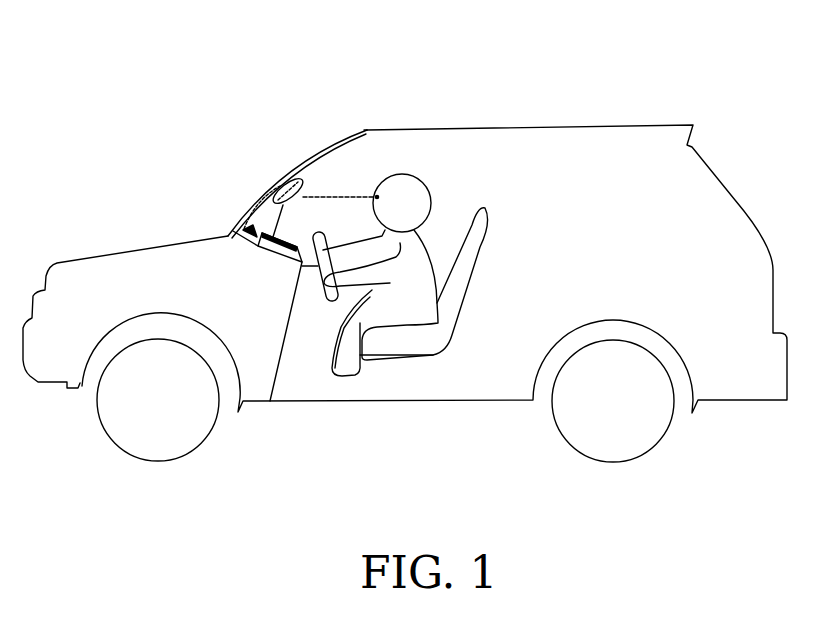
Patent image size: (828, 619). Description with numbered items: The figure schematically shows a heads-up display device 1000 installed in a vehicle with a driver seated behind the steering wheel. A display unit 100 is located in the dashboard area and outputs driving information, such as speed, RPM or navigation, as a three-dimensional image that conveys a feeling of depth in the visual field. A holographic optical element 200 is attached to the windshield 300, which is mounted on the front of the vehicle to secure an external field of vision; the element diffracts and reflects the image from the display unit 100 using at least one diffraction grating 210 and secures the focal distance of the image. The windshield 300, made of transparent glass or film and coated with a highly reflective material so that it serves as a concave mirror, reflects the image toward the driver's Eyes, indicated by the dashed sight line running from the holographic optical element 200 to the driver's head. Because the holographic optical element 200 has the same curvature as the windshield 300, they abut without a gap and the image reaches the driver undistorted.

The heads-up display device 1000 is at (693, 58).
The display unit 100 is at (243, 231).
The holographic optical element 200 is at (305, 180).
The diffraction grating 210 is at (275, 179).
The windshield 300 is at (364, 130).
The driver's eyes Eyes is at (376, 195).